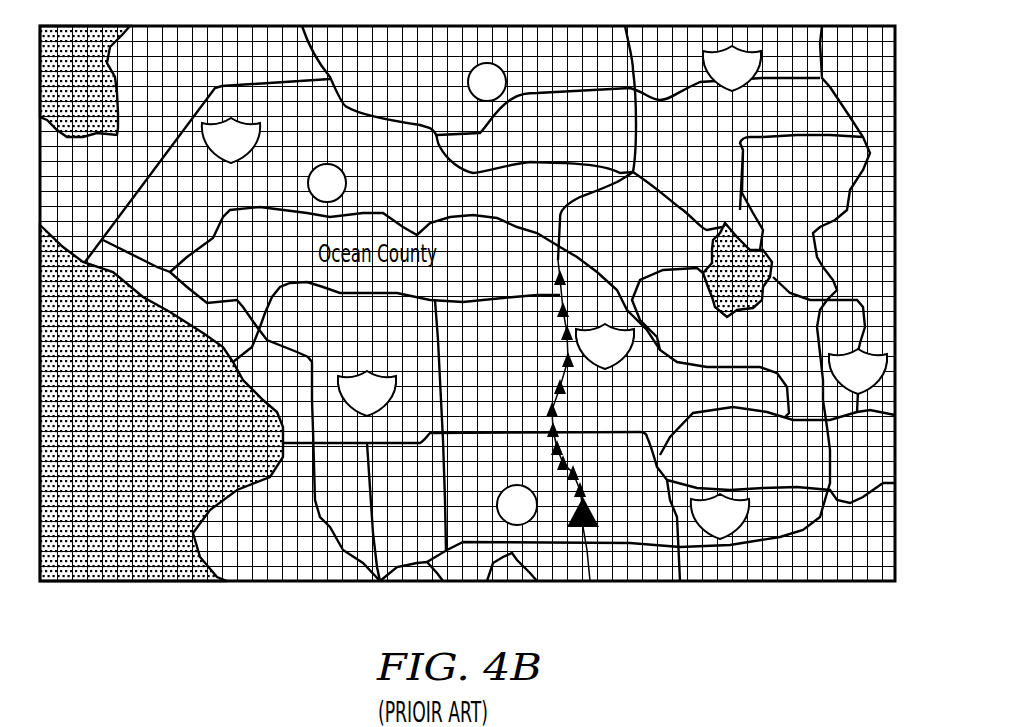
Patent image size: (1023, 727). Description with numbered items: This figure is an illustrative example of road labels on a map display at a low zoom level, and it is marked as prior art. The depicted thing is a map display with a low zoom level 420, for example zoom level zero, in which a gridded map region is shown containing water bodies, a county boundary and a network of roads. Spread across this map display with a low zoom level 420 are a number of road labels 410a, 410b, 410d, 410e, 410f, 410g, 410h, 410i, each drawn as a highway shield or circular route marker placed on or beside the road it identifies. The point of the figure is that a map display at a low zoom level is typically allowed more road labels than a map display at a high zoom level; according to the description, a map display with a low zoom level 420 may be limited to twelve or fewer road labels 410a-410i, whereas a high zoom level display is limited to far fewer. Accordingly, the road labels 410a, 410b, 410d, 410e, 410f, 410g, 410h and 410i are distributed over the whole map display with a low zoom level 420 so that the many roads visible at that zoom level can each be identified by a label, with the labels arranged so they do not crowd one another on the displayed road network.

The map display with a low zoom level 420 is at (895, 138).
The road label 410a is at (887, 372).
The road label 410b is at (733, 92).
The road label 410d is at (262, 140).
The road label 410e is at (467, 82).
The road label 410f is at (517, 484).
The road label 410g is at (623, 362).
The road label 410h is at (745, 527).
The road label 410i is at (346, 183).